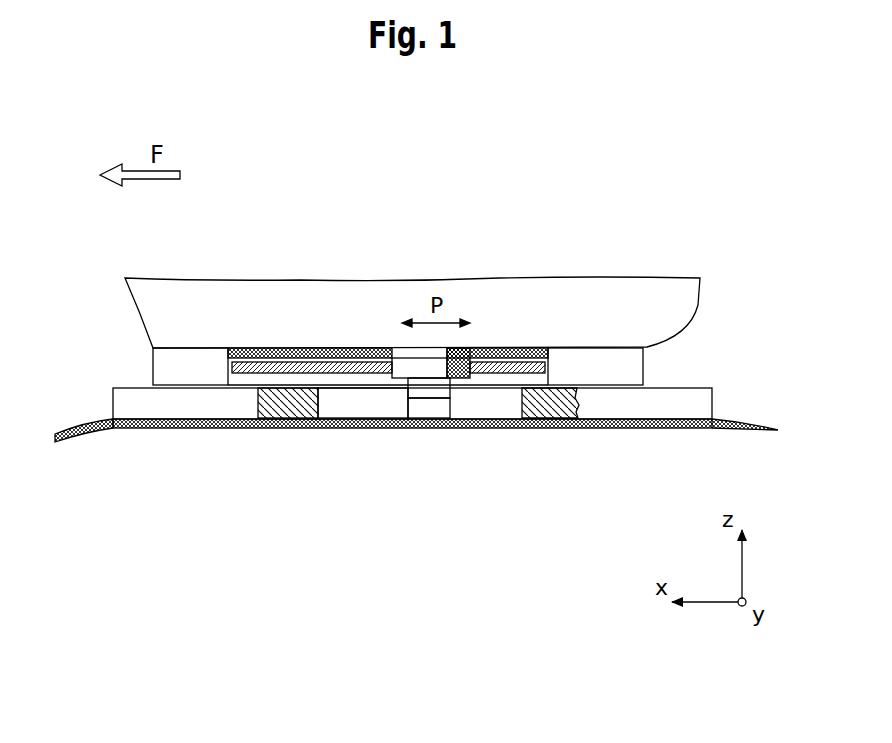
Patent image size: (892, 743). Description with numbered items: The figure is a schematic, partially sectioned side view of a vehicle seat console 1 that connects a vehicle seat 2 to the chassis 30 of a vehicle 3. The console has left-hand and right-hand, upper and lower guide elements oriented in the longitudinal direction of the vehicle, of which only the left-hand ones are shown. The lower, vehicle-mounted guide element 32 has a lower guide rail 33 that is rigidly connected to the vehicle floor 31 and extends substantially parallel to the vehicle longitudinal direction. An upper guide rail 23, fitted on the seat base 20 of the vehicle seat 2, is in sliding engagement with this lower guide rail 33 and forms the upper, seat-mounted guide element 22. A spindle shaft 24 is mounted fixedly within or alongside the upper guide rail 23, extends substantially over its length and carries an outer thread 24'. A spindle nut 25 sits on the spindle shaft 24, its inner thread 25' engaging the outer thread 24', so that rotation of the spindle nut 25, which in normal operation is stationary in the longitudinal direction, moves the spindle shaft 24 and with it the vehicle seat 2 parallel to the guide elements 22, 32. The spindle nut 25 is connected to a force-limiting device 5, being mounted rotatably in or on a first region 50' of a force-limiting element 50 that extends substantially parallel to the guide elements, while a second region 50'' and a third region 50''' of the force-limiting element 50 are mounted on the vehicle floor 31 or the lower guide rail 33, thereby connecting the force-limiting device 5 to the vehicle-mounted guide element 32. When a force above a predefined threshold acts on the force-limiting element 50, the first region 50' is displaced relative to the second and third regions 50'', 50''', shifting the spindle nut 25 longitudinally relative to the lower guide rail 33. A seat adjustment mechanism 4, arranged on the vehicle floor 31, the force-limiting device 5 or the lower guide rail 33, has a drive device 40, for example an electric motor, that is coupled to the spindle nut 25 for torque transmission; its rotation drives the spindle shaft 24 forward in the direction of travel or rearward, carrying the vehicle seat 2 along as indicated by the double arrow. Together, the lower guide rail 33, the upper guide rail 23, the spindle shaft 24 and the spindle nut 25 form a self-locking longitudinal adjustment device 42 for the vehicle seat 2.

The vehicle seat console 1 is at (735, 368).
The vehicle seat 2 is at (113, 286).
The seat base 20 is at (630, 290).
The upper, seat-mounted guide element 22 is at (655, 368).
The upper guide rail 23 is at (163, 368).
The spindle shaft 24 is at (388, 294).
The outer thread 24' is at (388, 299).
The spindle nut 25 is at (407, 304).
The inner thread 25' is at (470, 302).
The vehicle 3 is at (122, 456).
The chassis 30 is at (86, 447).
The vehicle floor 31 is at (165, 430).
The lower, vehicle-mounted guide element 32 is at (724, 401).
The lower guide rail 33 is at (127, 407).
The seat adjustment mechanism 4 is at (432, 440).
The drive device 40 is at (452, 396).
The longitudinal adjustment device 42 is at (455, 368).
The force-limiting device 5 is at (344, 438).
The force-limiting element 50 is at (363, 451).
The first region 50' is at (416, 446).
The second region 50'' is at (291, 441).
The third region 50''' is at (544, 441).